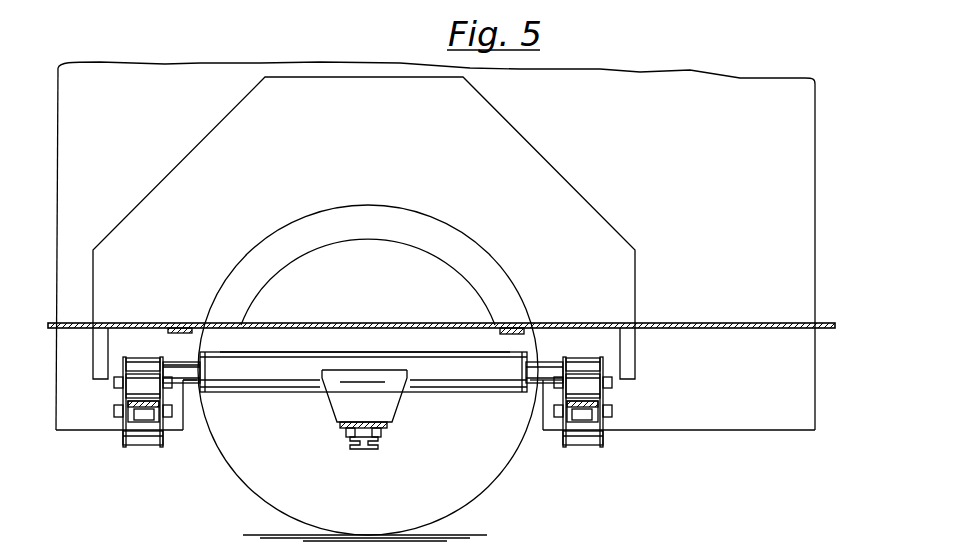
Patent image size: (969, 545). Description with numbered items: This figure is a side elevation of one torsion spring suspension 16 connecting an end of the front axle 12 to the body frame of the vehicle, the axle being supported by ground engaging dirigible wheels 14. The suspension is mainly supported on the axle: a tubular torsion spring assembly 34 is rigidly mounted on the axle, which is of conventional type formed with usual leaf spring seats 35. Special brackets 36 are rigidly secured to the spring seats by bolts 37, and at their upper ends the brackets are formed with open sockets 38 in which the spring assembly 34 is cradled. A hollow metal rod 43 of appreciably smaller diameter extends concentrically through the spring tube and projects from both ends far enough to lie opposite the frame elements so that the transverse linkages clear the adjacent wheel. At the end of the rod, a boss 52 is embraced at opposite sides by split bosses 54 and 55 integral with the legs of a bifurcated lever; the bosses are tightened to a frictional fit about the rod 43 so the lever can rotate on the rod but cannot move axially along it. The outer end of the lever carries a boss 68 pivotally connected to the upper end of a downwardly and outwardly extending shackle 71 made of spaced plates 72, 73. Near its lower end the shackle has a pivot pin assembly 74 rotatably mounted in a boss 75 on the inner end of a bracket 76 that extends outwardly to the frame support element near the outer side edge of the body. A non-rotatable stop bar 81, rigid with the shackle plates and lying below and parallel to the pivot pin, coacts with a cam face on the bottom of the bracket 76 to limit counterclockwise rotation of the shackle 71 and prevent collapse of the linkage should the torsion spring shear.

The front axle 12 is at (370, 449).
The dirigible wheels 14 is at (492, 461).
The torsion spring suspension 16 is at (322, 350).
The tubular torsion spring assembly 34 is at (262, 392).
The leaf spring seats 35 is at (340, 426).
The brackets 36 is at (395, 398).
The bolts 37 is at (383, 438).
The open sockets 38 is at (406, 375).
The rod 43 is at (185, 384).
The boss 52 is at (150, 358).
The split boss 54 is at (170, 364).
The split boss 55 is at (136, 358).
The boss 68 is at (124, 390).
The shackle 71 is at (121, 438).
The shackle plate 72 is at (612, 402).
The shackle plate 73 is at (558, 392).
The pivot pin assembly 74 is at (612, 418).
The boss 75 is at (563, 441).
The bracket 76 is at (150, 420).
The stop bar 81 is at (152, 446).